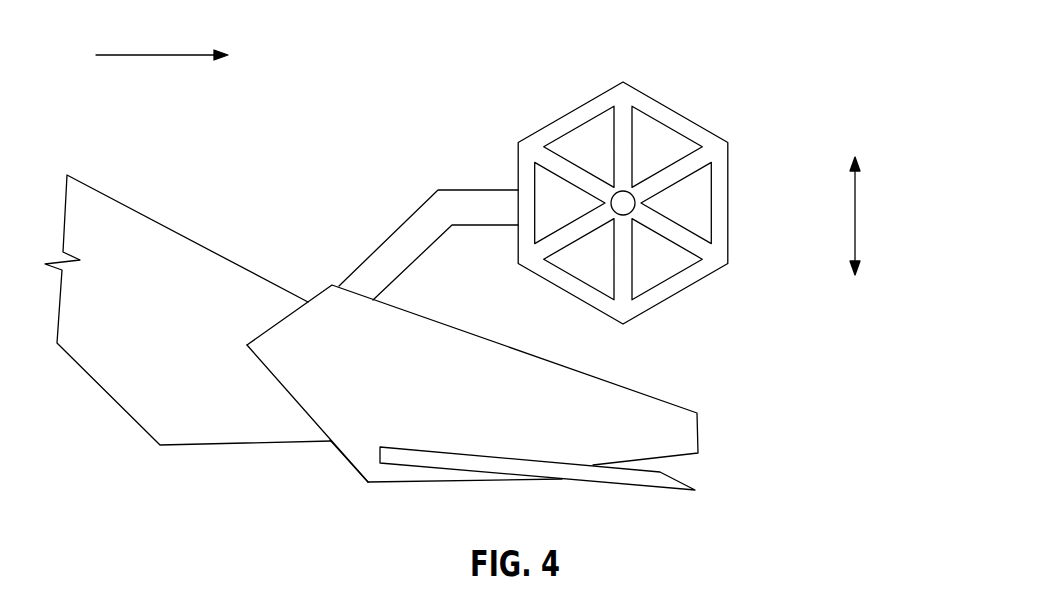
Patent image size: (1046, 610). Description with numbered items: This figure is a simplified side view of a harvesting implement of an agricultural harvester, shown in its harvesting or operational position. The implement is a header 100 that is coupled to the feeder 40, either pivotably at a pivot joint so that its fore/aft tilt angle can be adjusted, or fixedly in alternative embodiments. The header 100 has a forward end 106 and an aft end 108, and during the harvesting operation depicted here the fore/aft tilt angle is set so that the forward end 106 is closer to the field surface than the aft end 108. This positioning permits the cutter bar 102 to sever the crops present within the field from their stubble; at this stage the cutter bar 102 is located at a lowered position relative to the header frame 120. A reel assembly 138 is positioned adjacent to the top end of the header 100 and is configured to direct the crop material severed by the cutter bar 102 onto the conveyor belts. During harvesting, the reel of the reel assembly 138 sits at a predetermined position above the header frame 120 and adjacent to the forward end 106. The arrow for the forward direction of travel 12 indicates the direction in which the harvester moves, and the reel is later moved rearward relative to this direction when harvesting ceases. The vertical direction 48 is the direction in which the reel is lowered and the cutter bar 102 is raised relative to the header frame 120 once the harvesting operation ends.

The forward direction of travel 12 is at (155, 57).
The feeder 40 is at (155, 405).
The vertical direction 48 is at (856, 205).
The header 100 is at (397, 187).
The cutter bar 102 is at (653, 491).
The forward end 106 is at (743, 413).
The aft end 108 is at (340, 450).
The header frame 120 is at (295, 403).
The reel assembly 138 is at (668, 107).